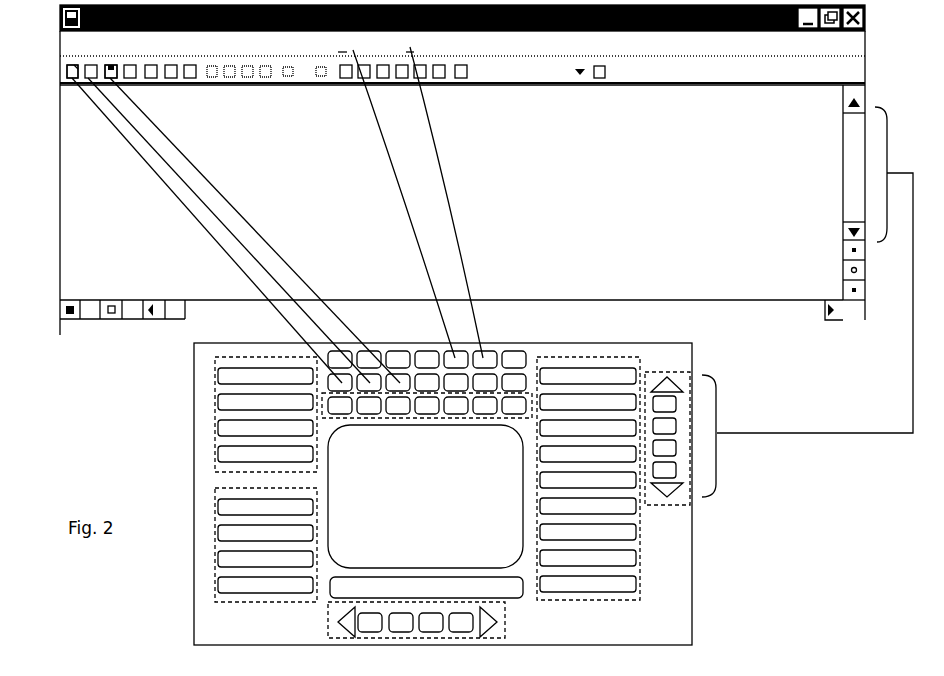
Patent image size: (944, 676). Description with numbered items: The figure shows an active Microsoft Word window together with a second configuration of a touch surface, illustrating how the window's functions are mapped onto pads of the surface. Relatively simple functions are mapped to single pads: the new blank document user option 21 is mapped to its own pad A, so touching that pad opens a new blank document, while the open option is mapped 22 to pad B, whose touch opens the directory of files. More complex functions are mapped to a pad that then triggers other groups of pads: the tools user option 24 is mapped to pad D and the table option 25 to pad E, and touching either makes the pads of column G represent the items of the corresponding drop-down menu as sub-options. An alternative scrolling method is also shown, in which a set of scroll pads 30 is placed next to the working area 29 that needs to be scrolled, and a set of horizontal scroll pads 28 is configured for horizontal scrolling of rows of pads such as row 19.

The row of pads 19 is at (63, 15).
The new blank document user option 21 is at (66, 71).
The open option mapping 22 is at (100, 68).
The tools user option 24 is at (338, 44).
The table option 25 is at (438, 43).
The set of horizontal scroll pads 28 is at (505, 628).
The working area 29 is at (640, 547).
The set of scroll pads 30 is at (662, 372).